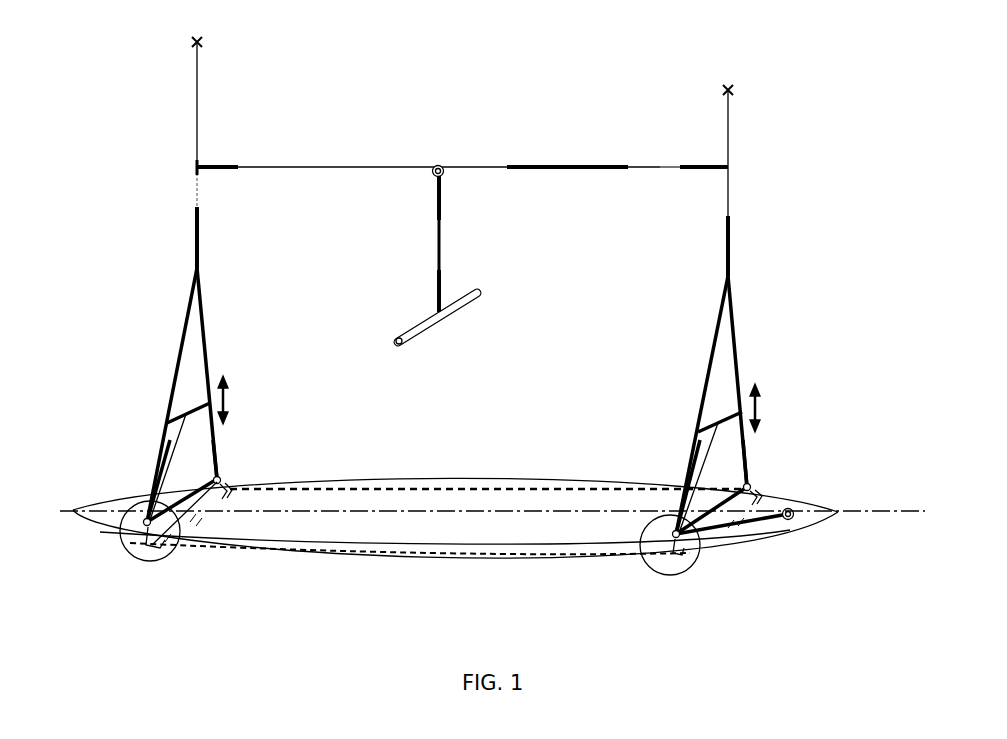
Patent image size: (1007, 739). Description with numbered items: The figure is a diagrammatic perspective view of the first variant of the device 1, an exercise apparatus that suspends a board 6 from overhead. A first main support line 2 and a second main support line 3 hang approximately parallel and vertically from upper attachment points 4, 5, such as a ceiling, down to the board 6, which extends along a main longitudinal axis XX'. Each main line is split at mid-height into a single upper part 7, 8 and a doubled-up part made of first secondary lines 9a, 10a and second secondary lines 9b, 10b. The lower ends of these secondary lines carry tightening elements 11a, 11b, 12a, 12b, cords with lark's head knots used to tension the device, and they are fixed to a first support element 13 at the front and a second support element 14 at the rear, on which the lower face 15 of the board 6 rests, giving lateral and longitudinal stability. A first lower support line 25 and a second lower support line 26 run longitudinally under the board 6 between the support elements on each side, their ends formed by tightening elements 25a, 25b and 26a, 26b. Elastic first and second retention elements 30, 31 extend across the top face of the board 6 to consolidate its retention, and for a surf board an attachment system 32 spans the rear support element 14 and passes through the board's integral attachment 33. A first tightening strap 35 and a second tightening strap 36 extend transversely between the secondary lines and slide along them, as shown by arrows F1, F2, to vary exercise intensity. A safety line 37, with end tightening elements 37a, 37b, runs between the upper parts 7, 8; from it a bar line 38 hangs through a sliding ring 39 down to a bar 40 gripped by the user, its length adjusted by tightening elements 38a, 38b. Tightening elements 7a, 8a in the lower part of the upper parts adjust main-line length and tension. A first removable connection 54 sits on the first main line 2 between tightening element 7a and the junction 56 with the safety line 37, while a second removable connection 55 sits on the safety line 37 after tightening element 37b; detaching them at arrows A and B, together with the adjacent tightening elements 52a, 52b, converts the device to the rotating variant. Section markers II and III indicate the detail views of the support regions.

The device 1 is at (765, 108).
The first main support line 2 is at (178, 112).
The second main support line 3 is at (746, 210).
The upper attachment point 4 is at (190, 40).
The upper attachment point 5 is at (726, 88).
The board 6 is at (383, 576).
The single upper part 7 is at (196, 130).
The tightening element 7a is at (196, 238).
The single upper part 8 is at (730, 151).
The tightening element 8a is at (731, 250).
The first secondary line 9a is at (180, 350).
The second secondary line 9b is at (206, 336).
The first secondary line 10a is at (708, 356).
The second secondary line 10b is at (740, 345).
The tightening element 11a is at (150, 485).
The tightening element 11b is at (218, 455).
The tightening element 12a is at (683, 502).
The tightening element 12b is at (752, 472).
The first support element 13 is at (200, 517).
The second support element 14 is at (737, 523).
The lower face 15 is at (455, 549).
The first lower support line 25 is at (510, 559).
The tightening element 25a is at (158, 562).
The tightening element 25b is at (672, 575).
The second lower support line 26 is at (445, 487).
The tightening element 26a is at (226, 486).
The tightening element 26b is at (703, 452).
The first retention element 30 is at (157, 463).
The second retention element 31 is at (705, 505).
The attachment system 32 is at (790, 497).
The attachment 33 is at (795, 511).
The first tightening strap 35 is at (187, 410).
The second tightening strap 36 is at (720, 420).
The safety line 37 is at (516, 128).
The tightening element 37a is at (222, 166).
The tightening element 37b is at (700, 166).
The bar line 38 is at (416, 262).
The tightening element 38a is at (441, 186).
The tightening element 38b is at (437, 292).
The ring 39 is at (436, 165).
The bar 40 is at (432, 332).
The tightening element 52a is at (540, 166).
The tightening element 52b is at (596, 170).
The first removable connection 54 is at (195, 192).
The second removable connection 55 is at (657, 170).
The junction 56 is at (195, 167).
The arrow A is at (190, 210).
The arrow B is at (628, 160).
The arrow F1 is at (226, 397).
The arrow F2 is at (758, 405).
The section II is at (177, 564).
The section III is at (640, 572).
The main longitudinal axis XX' XX is at (885, 510).